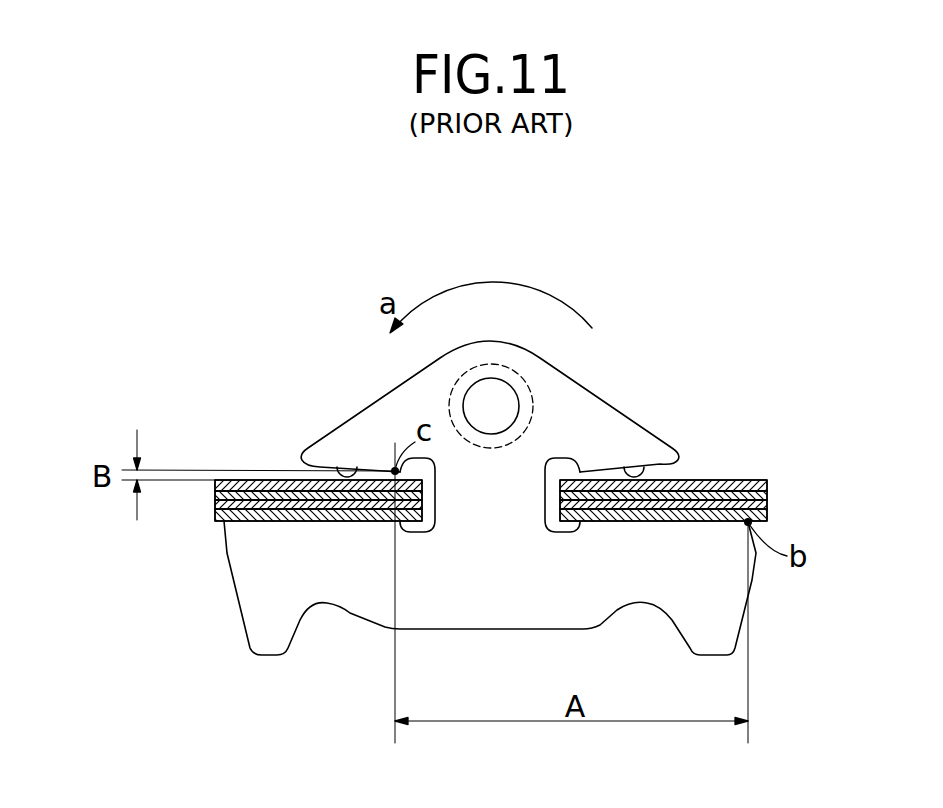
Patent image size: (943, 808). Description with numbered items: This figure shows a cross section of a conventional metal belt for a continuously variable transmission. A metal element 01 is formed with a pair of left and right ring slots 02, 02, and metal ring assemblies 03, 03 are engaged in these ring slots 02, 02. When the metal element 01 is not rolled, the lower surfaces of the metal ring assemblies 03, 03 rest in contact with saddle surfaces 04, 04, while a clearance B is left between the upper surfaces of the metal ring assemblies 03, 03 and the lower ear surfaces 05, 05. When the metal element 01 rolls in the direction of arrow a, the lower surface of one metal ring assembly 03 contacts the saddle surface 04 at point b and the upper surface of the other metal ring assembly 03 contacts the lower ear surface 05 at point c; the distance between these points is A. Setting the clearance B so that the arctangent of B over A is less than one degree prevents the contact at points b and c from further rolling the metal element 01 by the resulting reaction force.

The metal element 01 is at (253, 602).
The ring slot 02 is at (430, 497).
The metal ring assembly 03 is at (215, 503).
The saddle surface 04 is at (307, 507).
The lower ear surface 05 is at (337, 467).